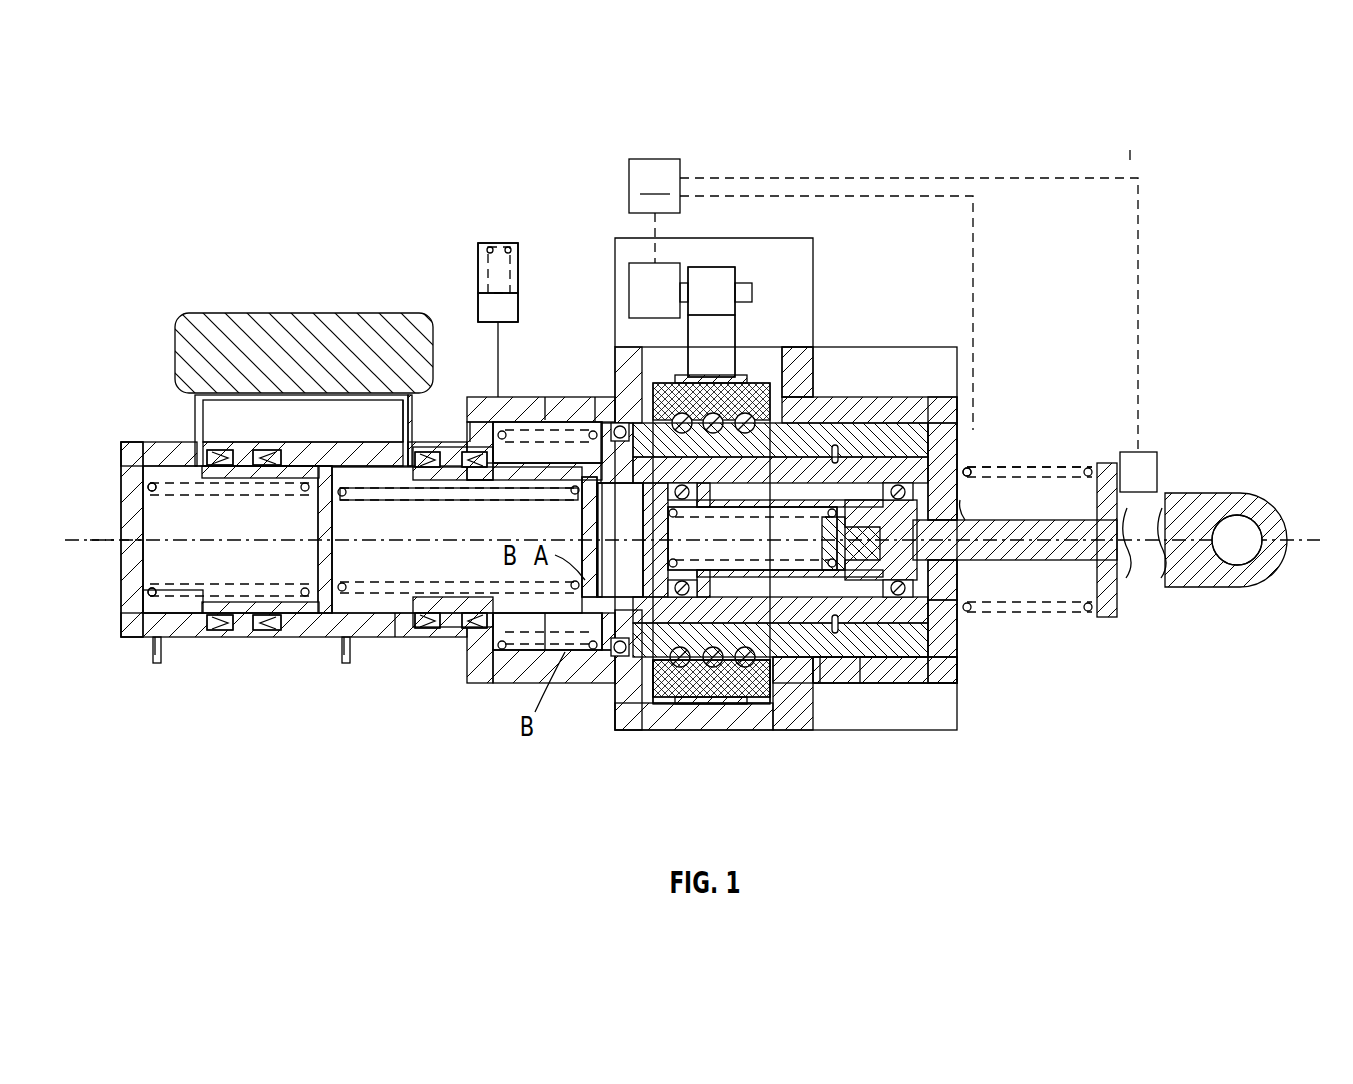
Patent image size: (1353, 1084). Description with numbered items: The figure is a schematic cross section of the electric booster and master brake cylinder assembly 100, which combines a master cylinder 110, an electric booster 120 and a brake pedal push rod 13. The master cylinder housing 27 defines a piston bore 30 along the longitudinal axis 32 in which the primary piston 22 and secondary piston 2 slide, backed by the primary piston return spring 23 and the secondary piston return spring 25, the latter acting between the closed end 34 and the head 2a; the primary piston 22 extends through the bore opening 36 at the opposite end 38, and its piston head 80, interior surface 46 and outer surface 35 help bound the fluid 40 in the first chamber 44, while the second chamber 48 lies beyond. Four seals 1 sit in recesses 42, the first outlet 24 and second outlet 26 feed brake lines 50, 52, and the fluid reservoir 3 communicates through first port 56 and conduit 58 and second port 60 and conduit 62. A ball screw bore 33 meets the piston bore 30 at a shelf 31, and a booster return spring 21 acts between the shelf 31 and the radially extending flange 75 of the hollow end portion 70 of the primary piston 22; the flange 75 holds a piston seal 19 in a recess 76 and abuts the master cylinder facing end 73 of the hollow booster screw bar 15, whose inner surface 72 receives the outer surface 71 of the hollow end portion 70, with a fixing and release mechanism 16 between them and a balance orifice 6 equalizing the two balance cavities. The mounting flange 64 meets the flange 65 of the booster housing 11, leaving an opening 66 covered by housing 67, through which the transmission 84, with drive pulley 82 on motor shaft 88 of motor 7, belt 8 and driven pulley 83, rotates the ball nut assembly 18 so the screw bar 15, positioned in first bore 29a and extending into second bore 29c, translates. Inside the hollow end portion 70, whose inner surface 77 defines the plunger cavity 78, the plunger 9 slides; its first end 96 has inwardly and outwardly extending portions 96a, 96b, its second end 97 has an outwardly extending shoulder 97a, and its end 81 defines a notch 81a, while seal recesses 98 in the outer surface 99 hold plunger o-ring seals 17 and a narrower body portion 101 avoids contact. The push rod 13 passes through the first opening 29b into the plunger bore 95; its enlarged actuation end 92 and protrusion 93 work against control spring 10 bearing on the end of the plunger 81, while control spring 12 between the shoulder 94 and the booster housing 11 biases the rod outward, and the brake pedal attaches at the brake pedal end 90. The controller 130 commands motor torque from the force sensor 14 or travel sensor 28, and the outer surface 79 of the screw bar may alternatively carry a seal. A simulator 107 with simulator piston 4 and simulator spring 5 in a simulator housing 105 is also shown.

The electric booster and master brake cylinder assembly 100 is at (1134, 141).
The master cylinder 110 is at (455, 175).
The electric booster 120 is at (910, 296).
The controller 130 is at (883, 305).
The fluid reservoir 3 is at (230, 305).
The simulator piston 4 is at (480, 305).
The simulator spring 5 is at (480, 262).
The simulator housing 105 is at (500, 245).
The simulator 107 is at (516, 240).
The motor 7 is at (630, 290).
The drive pulley 82 is at (715, 268).
The transmission 84 is at (752, 252).
The motor shaft 88 is at (752, 292).
The housing 67 is at (800, 237).
The belt 8 is at (735, 320).
The driven pulley 83 is at (745, 380).
The opening 66 is at (800, 350).
The flange 65 is at (812, 362).
The booster housing 11 is at (880, 380).
The plunger 9 is at (862, 485).
The first bore 29a is at (925, 420).
The outwardly extending portion 96b is at (965, 418).
The control spring 12 is at (1045, 467).
The force sensor 14 is at (1160, 468).
The brake pedal push rod 13 is at (1215, 488).
The first end 96 is at (968, 466).
The inwardly extending portion 96a is at (965, 512).
The travel sensor 28 is at (975, 528).
The brake pedal end 90 is at (1222, 572).
The first opening 29b is at (958, 572).
The shoulder 94 is at (1108, 612).
The outer surface 71 is at (950, 622).
The inner surface 72 is at (945, 684).
The hollow booster screw bar 15 is at (895, 665).
The inner surface 77 is at (872, 640).
The outer surface 79 is at (818, 635).
The fixing and release mechanism 16 is at (840, 690).
The plunger cavity 78 is at (765, 705).
The ball nut assembly 18 is at (770, 705).
The body portion 101 is at (722, 700).
The master cylinder facing end 73 is at (680, 665).
The second bore 29c is at (640, 708).
The circumferentially extending recess 76 is at (612, 655).
The piston seal 19 is at (605, 658).
The primary piston 22 is at (545, 645).
The booster return spring 21 is at (508, 640).
The shelf 31 is at (505, 620).
The recess 42 is at (265, 452).
The primary piston return spring 23 is at (400, 640).
The first outlet 24 is at (348, 655).
The brake line 50 is at (342, 652).
The secondary piston return spring 25 is at (180, 600).
The second outlet 26 is at (178, 640).
The brake line 52 is at (152, 650).
The second chamber 48 is at (160, 585).
The longitudinal axis 32 is at (95, 545).
The closed end 34 is at (140, 500).
The master cylinder housing 27 is at (126, 424).
The piston bore 30 is at (150, 462).
The conduit 58 is at (197, 410).
The seals 1 is at (220, 452).
The secondary piston 2 is at (315, 528).
The head 2a is at (318, 550).
The first port 56 is at (200, 470).
The conduit 62 is at (404, 432).
The second port 60 is at (420, 442).
The opposite end 38 is at (470, 450).
The ball screw bore 33 is at (530, 430).
The flange 64 is at (625, 362).
The outwardly extending shoulder 97a is at (598, 430).
The radially extending flange 75 is at (650, 480).
The plunger o-ring seals 17 is at (700, 475).
The control spring 10 is at (768, 482).
The balance orifice 6 is at (617, 453).
The hollow end portion 70 is at (628, 488).
The end of the plunger 81 is at (620, 540).
The notch 81a is at (676, 540).
The seal recess 98 is at (700, 512).
The protrusion 93 is at (824, 545).
The enlarged actuation end 92 is at (846, 533).
The bore opening 36 is at (515, 435).
The outer surface 35 is at (545, 437).
The interior surface 46 is at (440, 470).
The fluid 40 is at (470, 531).
The piston head 80 is at (580, 510).
The first chamber 44 is at (380, 500).
The second end 97 is at (616, 588).
The plunger bore 95 is at (780, 636).
The outer surface 99 is at (780, 553).